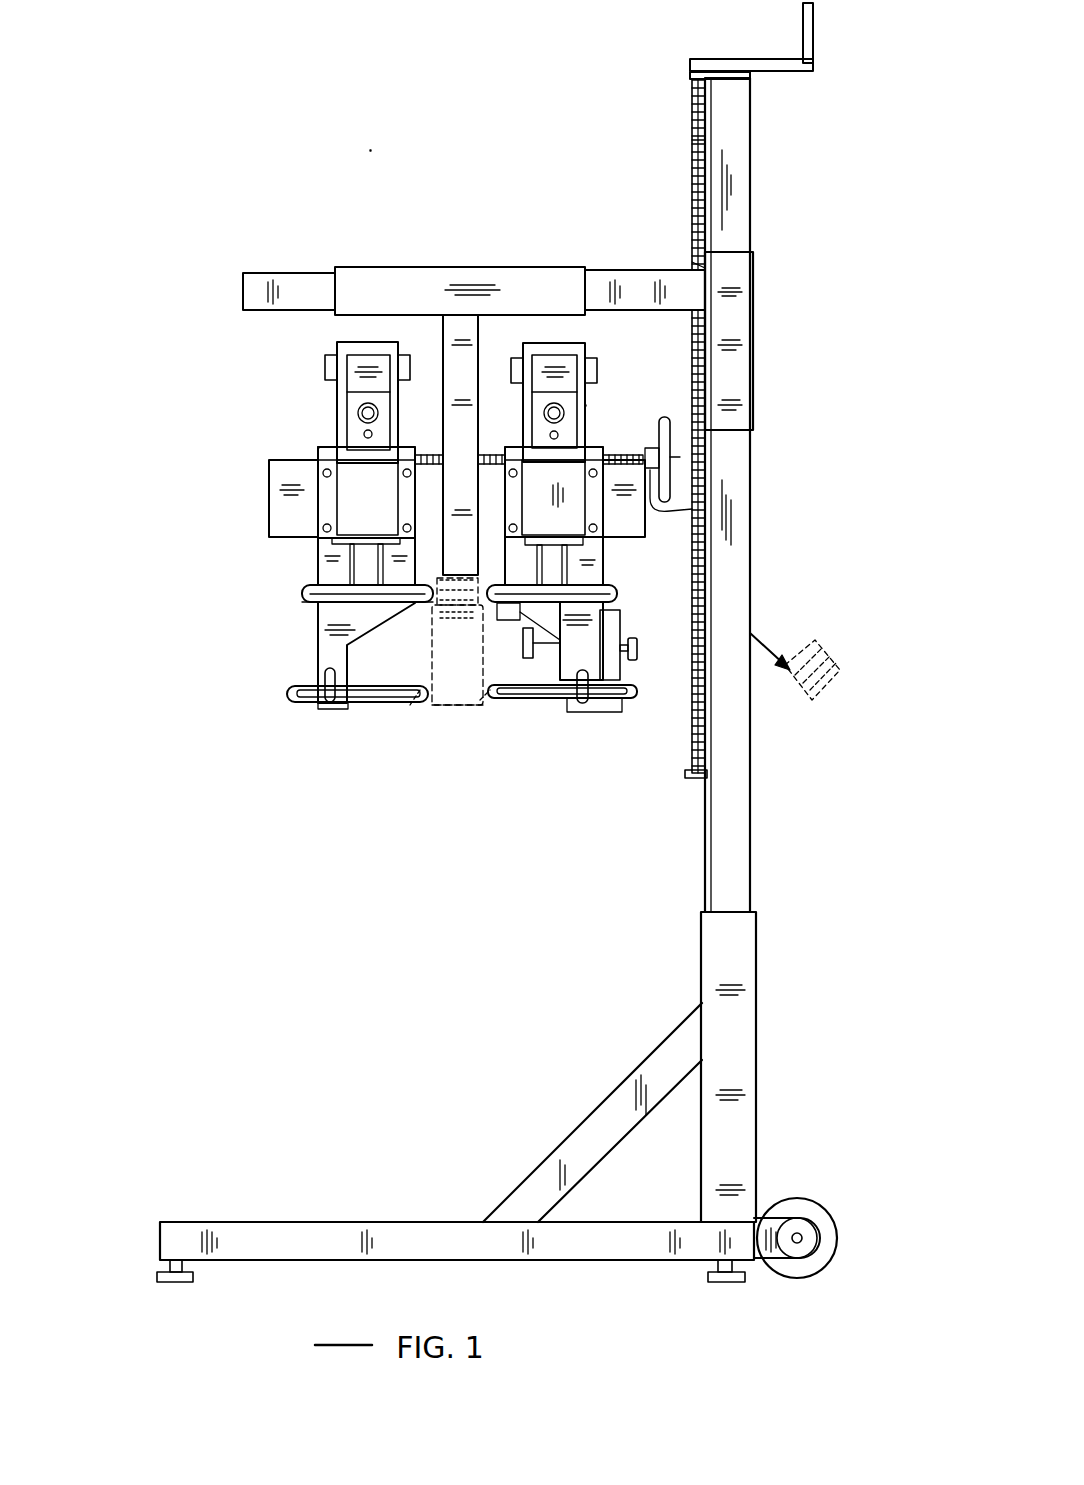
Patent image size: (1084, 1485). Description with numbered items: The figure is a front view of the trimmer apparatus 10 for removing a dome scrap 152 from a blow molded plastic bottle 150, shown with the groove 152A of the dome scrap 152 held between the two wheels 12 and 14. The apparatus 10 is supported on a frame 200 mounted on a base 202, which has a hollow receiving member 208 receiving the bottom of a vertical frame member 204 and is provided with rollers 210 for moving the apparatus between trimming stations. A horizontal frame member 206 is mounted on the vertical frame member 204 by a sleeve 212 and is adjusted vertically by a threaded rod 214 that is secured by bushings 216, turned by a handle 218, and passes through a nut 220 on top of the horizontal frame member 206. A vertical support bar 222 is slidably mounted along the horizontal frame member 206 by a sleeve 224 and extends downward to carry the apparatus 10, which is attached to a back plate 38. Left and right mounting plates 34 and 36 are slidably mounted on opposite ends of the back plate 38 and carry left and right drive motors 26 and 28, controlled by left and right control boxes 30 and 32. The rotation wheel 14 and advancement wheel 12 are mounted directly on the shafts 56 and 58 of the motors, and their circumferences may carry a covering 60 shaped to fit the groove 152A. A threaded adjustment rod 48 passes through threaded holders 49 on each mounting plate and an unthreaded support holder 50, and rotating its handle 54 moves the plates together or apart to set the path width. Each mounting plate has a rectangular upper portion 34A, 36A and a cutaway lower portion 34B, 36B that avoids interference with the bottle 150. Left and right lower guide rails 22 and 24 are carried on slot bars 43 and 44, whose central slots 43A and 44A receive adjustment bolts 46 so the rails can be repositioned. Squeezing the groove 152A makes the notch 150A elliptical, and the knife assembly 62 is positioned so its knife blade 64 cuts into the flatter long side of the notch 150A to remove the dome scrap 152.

The trimmer apparatus 10 is at (390, 150).
The advancement wheel 12 is at (684, 605).
The rotation wheel 14 is at (300, 593).
The left lower guide rail 22 is at (415, 715).
The right lower guide rail 24 is at (486, 705).
The left drive motor 26 is at (320, 455).
The right drive motor 28 is at (585, 405).
The left control box 30 is at (357, 367).
The right control box 32 is at (545, 365).
The left mounting plate 34 is at (330, 545).
The rectangular upper portion of left mounting plate 34A is at (322, 465).
The cutaway lower portion of left mounting plate 34B is at (318, 660).
The right mounting plate 36 is at (590, 550).
The rectangular upper portion of right mounting plate 36A is at (595, 455).
The cutaway lower portion of right mounting plate 36B is at (585, 625).
The back plate 38 is at (275, 490).
The left slot bar 43 is at (288, 695).
The central slot of left slot bar 43A is at (340, 710).
The right slot bar 44 is at (645, 700).
The central slot of right slot bar 44A is at (590, 714).
The adjustment bolts 46 is at (330, 702).
The threaded adjustment rod 48 is at (435, 455).
The threaded holders 49 is at (430, 470).
The support holder 50 is at (655, 505).
The handle 54 is at (664, 418).
The shaft of left drive motor 56 is at (360, 565).
The shaft of right drive motor 58 is at (552, 572).
The covering 60 is at (320, 605).
The knife assembly 62 is at (548, 702).
The knife blade 64 is at (528, 630).
The bottle 150 is at (434, 710).
The notch 150A is at (430, 575).
The dome scrap 152 is at (420, 612).
The groove 152A is at (430, 580).
The frame 200 is at (735, 200).
The base 202 is at (275, 1235).
The vertical frame member 204 is at (740, 462).
The horizontal frame member 206 is at (294, 287).
The hollow receiving member 208 is at (740, 1020).
The rollers 210 is at (800, 1198).
The sleeve 212 is at (745, 325).
The threaded rod 214 is at (690, 155).
The bushings 216 is at (692, 82).
The handle 218 is at (697, 60).
The nut 220 is at (688, 262).
The vertical support bar 222 is at (445, 335).
The sleeve 224 is at (465, 300).